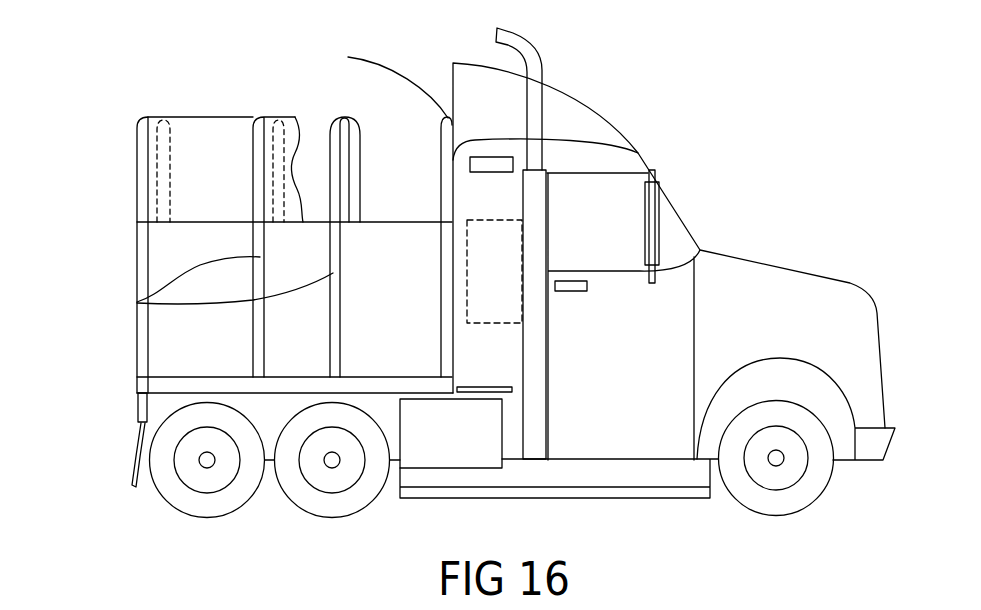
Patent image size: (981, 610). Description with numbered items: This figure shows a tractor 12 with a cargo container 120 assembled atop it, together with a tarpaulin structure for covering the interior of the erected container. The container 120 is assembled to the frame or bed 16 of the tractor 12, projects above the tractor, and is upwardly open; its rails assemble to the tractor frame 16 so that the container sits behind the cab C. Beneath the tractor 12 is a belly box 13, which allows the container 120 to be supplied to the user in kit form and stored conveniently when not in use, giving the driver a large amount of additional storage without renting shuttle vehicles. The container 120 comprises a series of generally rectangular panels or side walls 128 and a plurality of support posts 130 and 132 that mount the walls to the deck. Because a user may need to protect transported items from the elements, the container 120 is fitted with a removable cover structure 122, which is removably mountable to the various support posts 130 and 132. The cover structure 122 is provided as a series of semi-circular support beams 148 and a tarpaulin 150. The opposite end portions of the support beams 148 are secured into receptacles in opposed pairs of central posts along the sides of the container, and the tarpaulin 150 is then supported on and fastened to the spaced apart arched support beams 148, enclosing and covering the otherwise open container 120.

The tractor 12 is at (593, 108).
The belly box 13 is at (577, 477).
The frame or bed 16 is at (177, 418).
The cab C is at (632, 188).
The cargo container 120 is at (98, 118).
The cover structure 122 is at (257, 112).
The panels or side walls 128 is at (165, 257).
The support posts 130 is at (142, 237).
The support posts 132 is at (137, 303).
The support beams 148 is at (343, 117).
The tarpaulin 150 is at (200, 128).